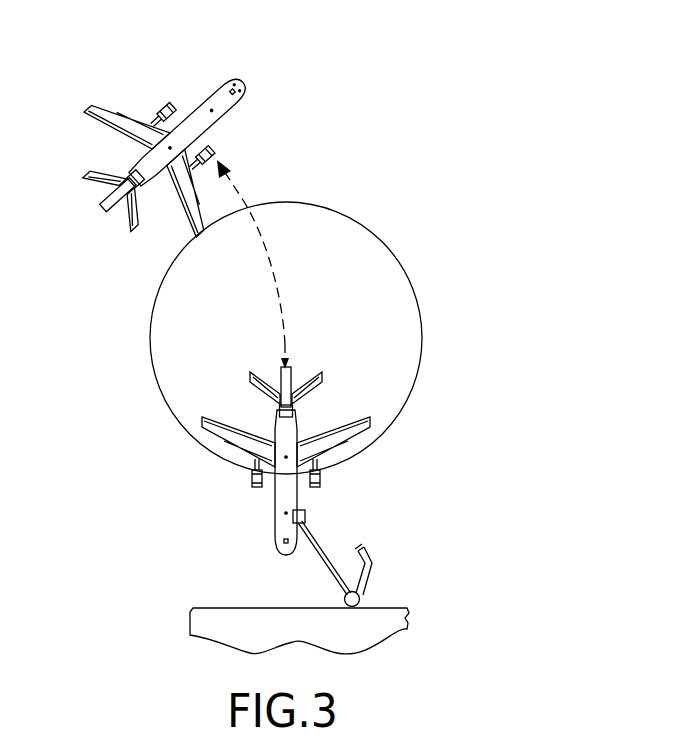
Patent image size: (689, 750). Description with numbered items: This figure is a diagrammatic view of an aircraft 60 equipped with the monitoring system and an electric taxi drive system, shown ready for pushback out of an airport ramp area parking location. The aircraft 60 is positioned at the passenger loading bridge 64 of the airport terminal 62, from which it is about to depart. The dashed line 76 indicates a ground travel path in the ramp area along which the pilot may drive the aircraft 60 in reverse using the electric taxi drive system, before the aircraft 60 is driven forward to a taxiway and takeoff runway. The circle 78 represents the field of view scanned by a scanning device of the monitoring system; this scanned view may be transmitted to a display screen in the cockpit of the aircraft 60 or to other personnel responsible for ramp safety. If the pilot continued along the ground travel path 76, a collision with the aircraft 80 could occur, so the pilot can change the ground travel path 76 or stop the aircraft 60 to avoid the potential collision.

The aircraft 60 is at (238, 514).
The airport terminal 62 is at (335, 634).
The passenger loading bridge 64 is at (327, 571).
The ground travel path 76 is at (245, 202).
The circle representing field of view 78 is at (422, 338).
The aircraft 80 is at (186, 90).